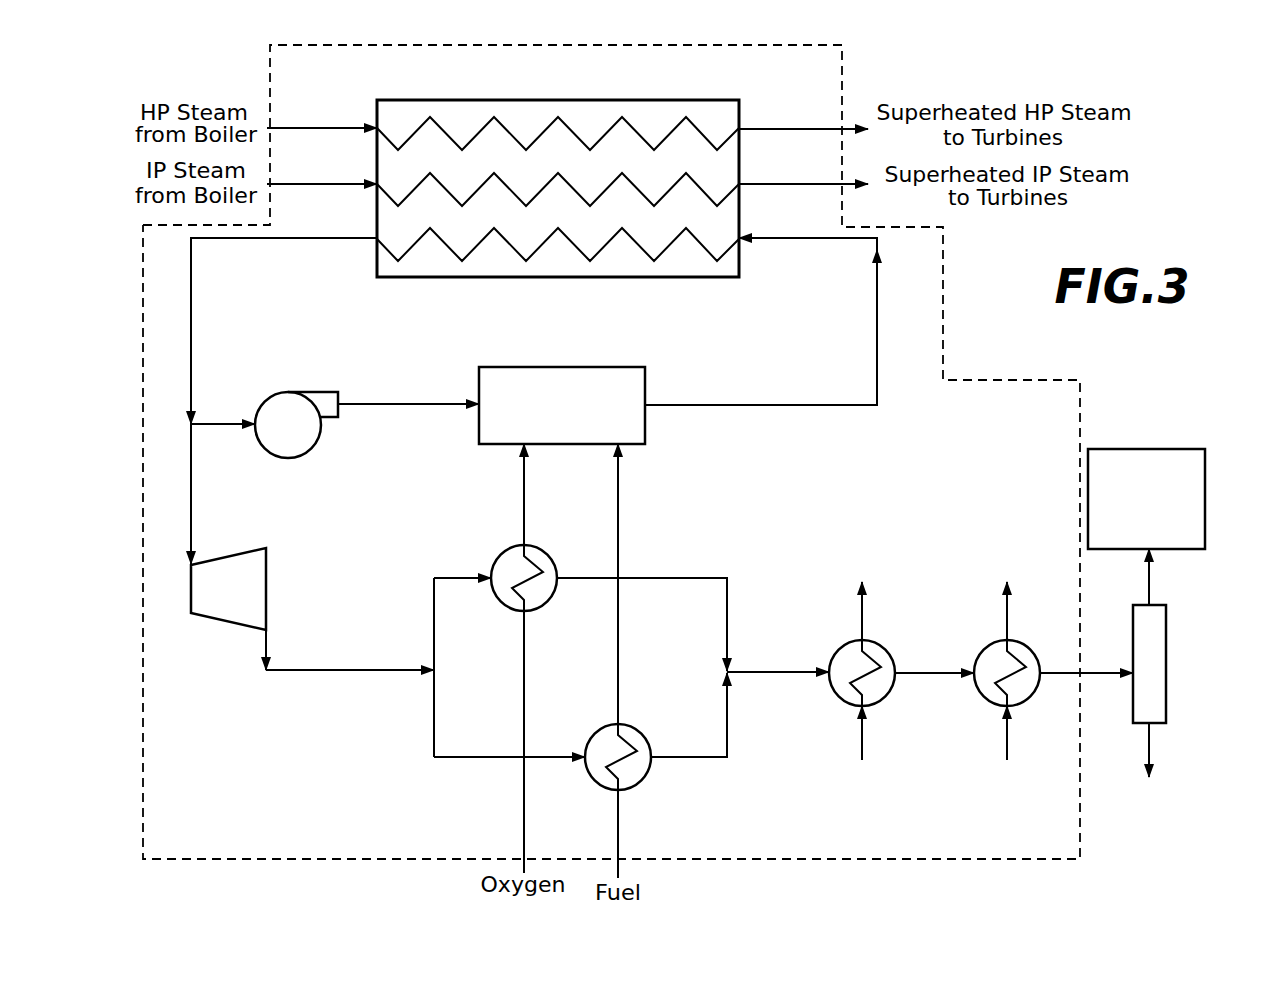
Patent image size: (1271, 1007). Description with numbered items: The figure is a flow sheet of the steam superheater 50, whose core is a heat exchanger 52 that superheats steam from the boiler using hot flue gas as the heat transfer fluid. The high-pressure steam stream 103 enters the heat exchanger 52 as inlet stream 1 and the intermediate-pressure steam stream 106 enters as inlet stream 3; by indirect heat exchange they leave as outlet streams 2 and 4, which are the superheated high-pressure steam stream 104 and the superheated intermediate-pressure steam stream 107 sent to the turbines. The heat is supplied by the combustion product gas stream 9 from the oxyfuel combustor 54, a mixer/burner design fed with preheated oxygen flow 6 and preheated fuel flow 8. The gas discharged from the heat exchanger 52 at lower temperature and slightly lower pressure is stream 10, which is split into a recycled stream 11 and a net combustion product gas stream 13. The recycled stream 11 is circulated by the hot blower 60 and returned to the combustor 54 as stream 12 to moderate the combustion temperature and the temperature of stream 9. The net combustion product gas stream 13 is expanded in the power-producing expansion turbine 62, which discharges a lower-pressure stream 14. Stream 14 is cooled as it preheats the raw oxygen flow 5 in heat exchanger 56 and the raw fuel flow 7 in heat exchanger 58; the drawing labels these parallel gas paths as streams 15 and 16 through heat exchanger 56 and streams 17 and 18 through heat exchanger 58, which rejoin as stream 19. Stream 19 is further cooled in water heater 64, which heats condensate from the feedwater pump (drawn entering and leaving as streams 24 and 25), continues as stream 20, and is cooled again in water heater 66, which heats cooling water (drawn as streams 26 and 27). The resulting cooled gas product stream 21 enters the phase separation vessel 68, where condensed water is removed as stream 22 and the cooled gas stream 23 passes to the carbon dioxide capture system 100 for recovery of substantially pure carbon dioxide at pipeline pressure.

The inlet stream 1 is at (322, 115).
The outlet stream 2 is at (803, 115).
The inlet stream 3 is at (322, 171).
The outlet stream 4 is at (803, 171).
The oxygen flow 5 is at (514, 742).
The oxygen flow 6 is at (512, 494).
The fuel flow 7 is at (629, 834).
The fuel flow 8 is at (628, 584).
The combustion product gas stream 9 is at (761, 307).
The stream 10 is at (267, 331).
The recycled stream 11 is at (223, 411).
The recycled stream 12 is at (408, 391).
The net combustion product gas stream 13 is at (174, 494).
The lower pressure net combustion product gas stream 14 is at (350, 650).
The compressed flue gas stream to oxygen preheater 15 is at (462, 564).
The cooled flue gas stream from oxygen preheater 16 is at (642, 610).
The compressed flue gas stream to fuel preheater 17 is at (509, 771).
The cooled flue gas stream from fuel preheater 18 is at (689, 729).
The combined flue gas stream 19 is at (778, 658).
The flue gas stream from first cooler 20 is at (934, 659).
The cooled gas product stream 21 is at (1086, 659).
The stream 22 is at (1166, 750).
The cooled gas product stream 23 is at (1166, 577).
The cooling medium inlet to first cooler 24 is at (844, 733).
The cooling medium outlet from first cooler 25 is at (844, 611).
The cooling medium inlet to second cooler 26 is at (989, 733).
The cooling medium outlet from second cooler 27 is at (989, 611).
The superheater 50 is at (866, 66).
The heat exchanger 52 is at (706, 278).
The oxyfuel combustor 54 is at (610, 367).
The heat exchanger 56 is at (543, 553).
The heat exchanger 58 is at (604, 728).
The hot blower 60 is at (290, 392).
The expansion turbine 62 is at (247, 553).
The water heater 64 is at (875, 641).
The water heater 66 is at (1020, 641).
The phase separation vessel 68 is at (1166, 694).
The CO2 capture system 100 is at (1140, 449).
The high-pressure steam stream 103 is at (336, 128).
The superheated high-pressure steam stream 104 is at (753, 129).
The intermediate-pressure steam stream 106 is at (290, 185).
The superheated intermediate-pressure steam stream 107 is at (836, 185).